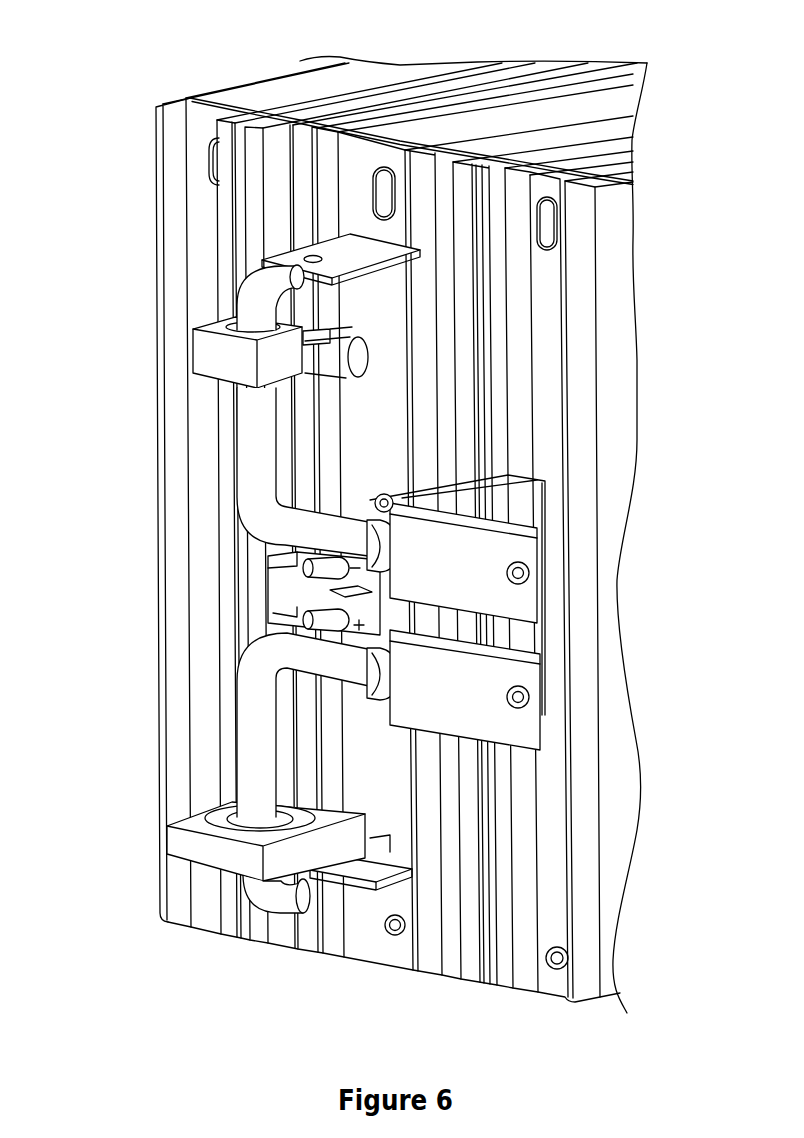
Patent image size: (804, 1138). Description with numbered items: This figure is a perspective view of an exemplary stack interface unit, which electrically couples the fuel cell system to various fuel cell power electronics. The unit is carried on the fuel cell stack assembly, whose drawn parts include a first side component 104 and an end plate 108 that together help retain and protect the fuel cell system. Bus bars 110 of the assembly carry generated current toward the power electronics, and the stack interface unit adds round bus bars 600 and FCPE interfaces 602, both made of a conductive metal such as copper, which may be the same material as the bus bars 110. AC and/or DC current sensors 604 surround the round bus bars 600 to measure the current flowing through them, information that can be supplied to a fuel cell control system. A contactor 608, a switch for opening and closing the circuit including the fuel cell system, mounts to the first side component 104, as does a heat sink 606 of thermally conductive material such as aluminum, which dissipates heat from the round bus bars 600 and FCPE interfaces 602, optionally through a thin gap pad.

The first side component 104 is at (190, 487).
The end plate 108 is at (470, 93).
The bus bar 110 is at (345, 240).
The round bus bar 600 is at (250, 436).
The FCPE interface 602 is at (513, 547).
The current sensor 604 is at (233, 361).
The heat sink 606 is at (535, 498).
The contactor 608 is at (275, 589).